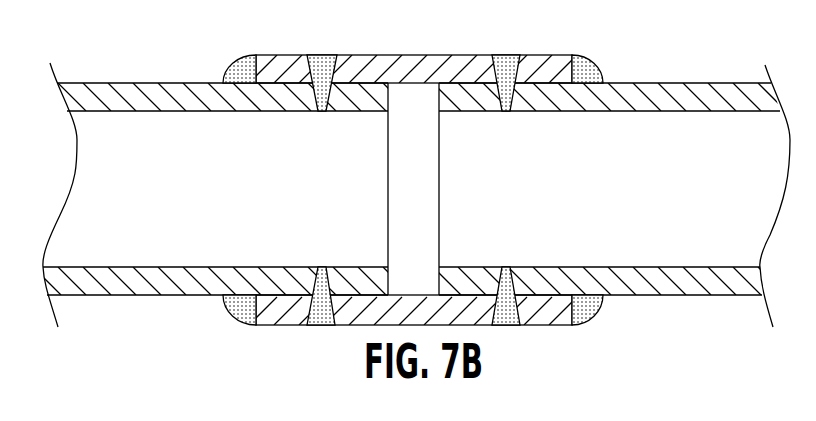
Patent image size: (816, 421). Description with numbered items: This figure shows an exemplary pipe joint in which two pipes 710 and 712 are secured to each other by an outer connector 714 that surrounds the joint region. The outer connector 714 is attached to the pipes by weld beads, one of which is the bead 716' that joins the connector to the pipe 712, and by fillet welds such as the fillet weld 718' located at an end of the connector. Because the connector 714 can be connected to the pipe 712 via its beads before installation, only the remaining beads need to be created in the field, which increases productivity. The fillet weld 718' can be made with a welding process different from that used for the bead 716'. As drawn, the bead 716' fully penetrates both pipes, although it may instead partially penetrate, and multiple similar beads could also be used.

The pipe 710 is at (140, 213).
The pipe 712 is at (677, 157).
The outer connector 714 is at (432, 55).
The bead 716' is at (532, 113).
The fillet weld 718' is at (611, 44).